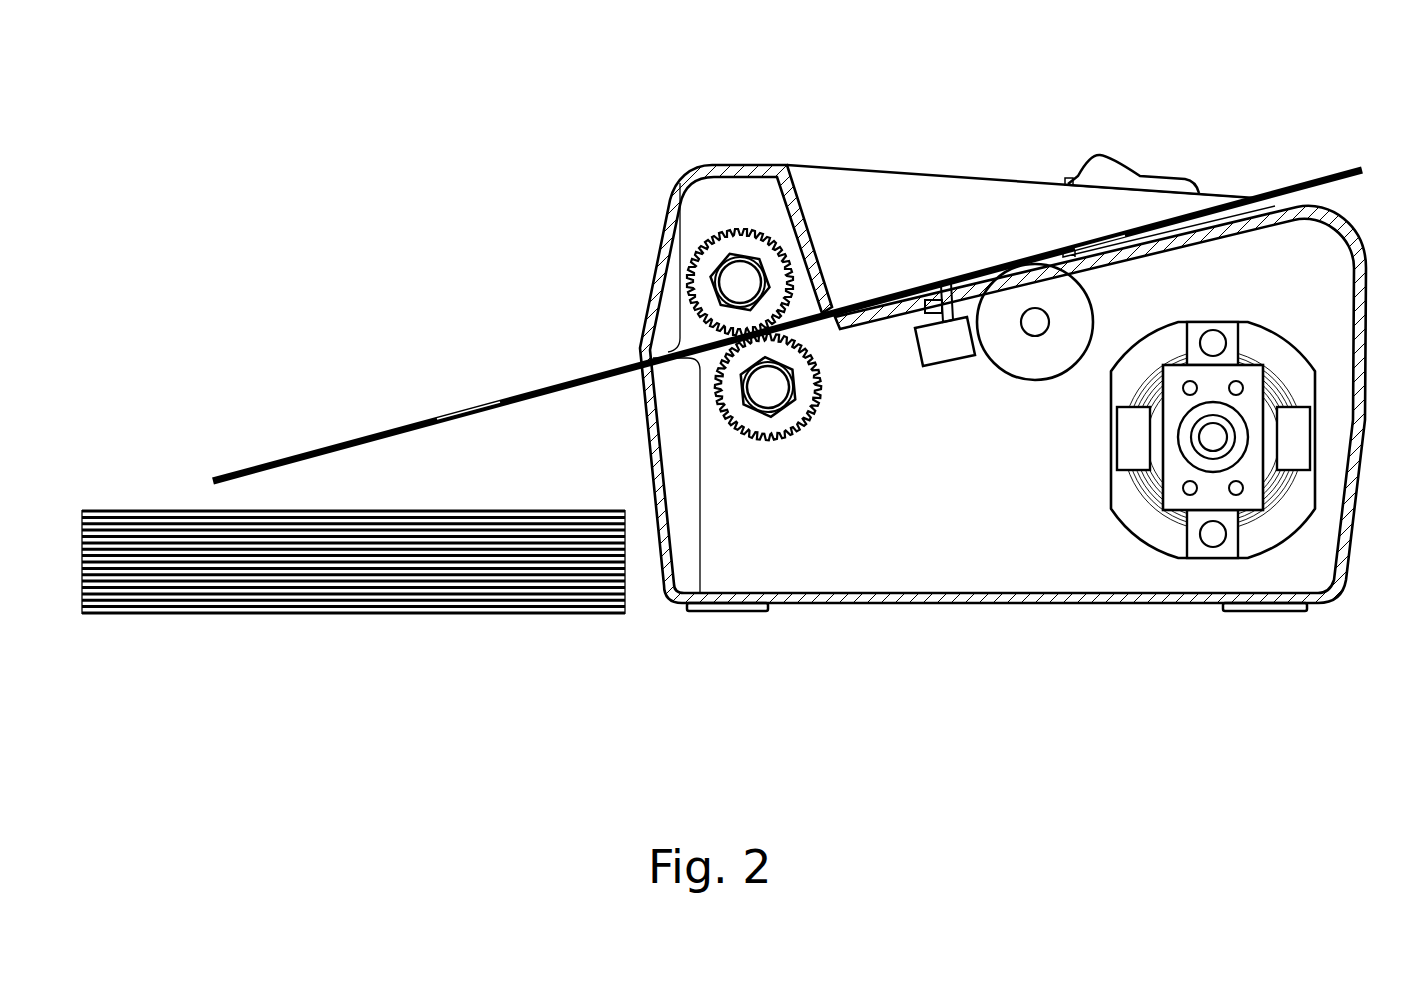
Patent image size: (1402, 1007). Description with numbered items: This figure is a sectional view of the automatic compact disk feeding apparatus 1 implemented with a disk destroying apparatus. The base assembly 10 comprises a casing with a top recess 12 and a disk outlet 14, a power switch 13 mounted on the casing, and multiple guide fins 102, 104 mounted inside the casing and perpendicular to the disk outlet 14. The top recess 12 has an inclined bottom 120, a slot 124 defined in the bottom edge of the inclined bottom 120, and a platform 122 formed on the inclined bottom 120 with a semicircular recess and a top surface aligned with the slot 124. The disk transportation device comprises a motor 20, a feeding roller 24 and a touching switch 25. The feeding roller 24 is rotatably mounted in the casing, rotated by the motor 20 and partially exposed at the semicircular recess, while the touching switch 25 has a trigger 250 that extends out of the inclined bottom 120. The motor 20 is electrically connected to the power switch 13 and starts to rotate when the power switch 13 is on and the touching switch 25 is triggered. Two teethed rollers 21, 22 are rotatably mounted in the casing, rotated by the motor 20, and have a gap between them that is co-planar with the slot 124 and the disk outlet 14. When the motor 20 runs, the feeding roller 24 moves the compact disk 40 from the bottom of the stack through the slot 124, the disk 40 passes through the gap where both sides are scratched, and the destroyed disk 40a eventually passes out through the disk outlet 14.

The automatic compact disk feeding apparatus 1 is at (442, 125).
The base assembly 10 is at (688, 168).
The guide fin 102 is at (666, 302).
The guide fin 104 is at (678, 446).
The disk outlet 14 is at (643, 356).
The top recess 12 is at (921, 227).
The inclined bottom 120 is at (1105, 300).
The platform 122 is at (1003, 268).
The slot 124 is at (846, 305).
The power switch 13 is at (1160, 176).
The motor 20 is at (1155, 522).
The teethed roller 21 is at (796, 418).
The teethed roller 22 is at (738, 250).
The feeding roller 24 is at (1028, 372).
The touching switch 25 is at (948, 356).
The trigger 250 is at (943, 285).
The compact disk 40 is at (1334, 170).
The destroyed disk 40a is at (382, 510).